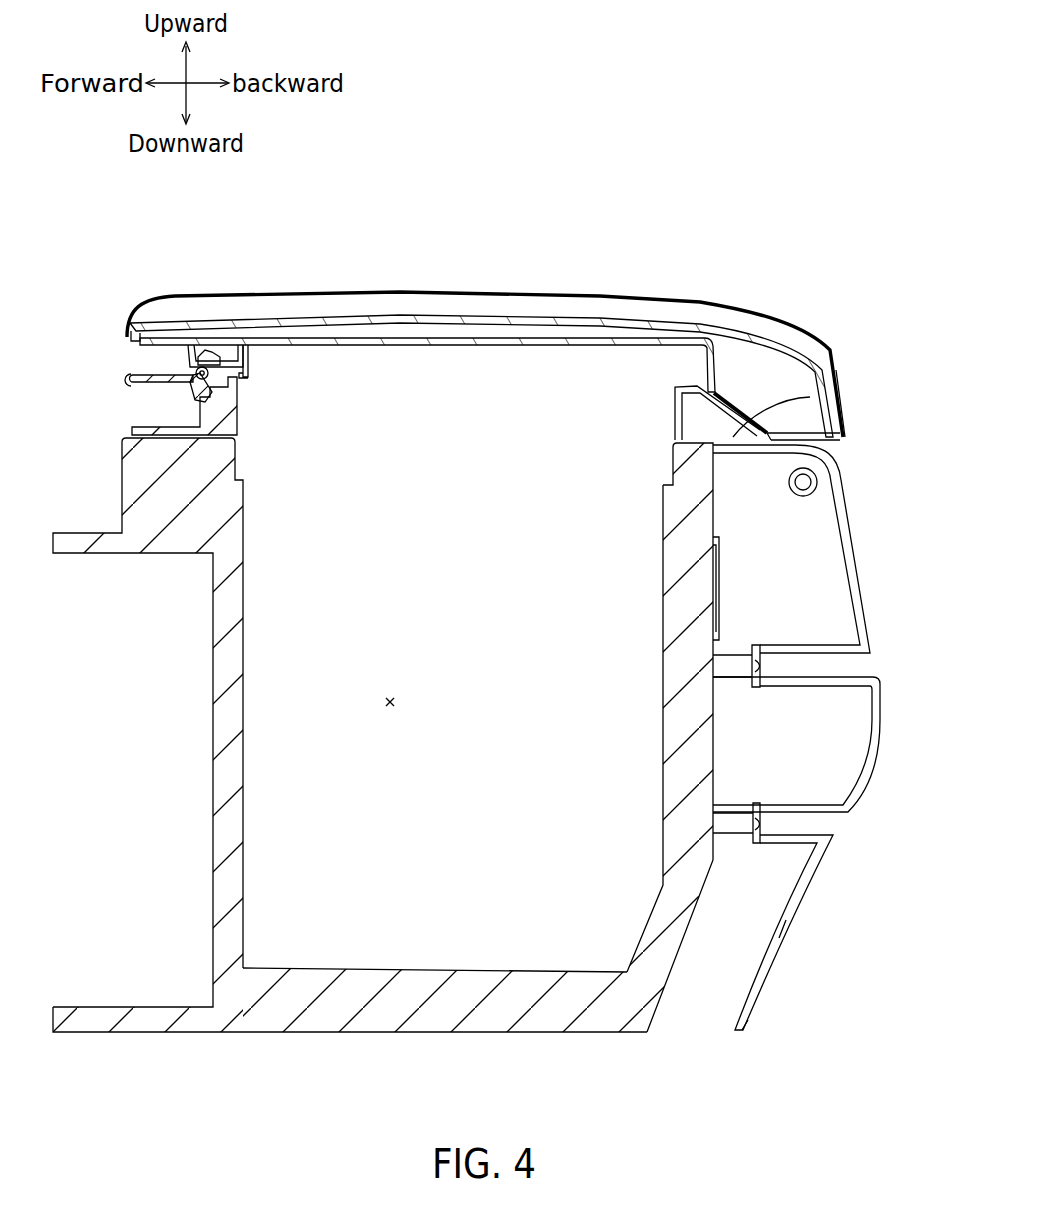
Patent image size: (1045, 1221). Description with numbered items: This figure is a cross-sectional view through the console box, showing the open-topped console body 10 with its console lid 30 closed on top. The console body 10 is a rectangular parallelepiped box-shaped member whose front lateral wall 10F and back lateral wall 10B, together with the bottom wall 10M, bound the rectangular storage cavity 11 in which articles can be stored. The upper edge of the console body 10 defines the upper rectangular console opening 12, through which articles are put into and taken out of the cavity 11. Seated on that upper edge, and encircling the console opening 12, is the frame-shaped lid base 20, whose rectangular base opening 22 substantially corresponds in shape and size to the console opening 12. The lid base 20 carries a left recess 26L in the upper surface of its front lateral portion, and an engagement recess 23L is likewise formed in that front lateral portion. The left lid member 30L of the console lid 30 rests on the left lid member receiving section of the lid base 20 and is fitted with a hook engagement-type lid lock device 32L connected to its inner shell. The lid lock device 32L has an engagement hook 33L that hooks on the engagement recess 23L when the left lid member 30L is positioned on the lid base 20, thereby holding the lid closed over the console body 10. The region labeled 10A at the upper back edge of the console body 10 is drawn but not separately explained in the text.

The console body 10 is at (499, 778).
The upper opening edge of housing 10A is at (810, 397).
The back lateral wall 10B is at (687, 780).
The front lateral wall 10F is at (228, 836).
The bottom wall 10M is at (440, 1007).
The storage portion or cavity 11 is at (388, 702).
The console opening 12 is at (670, 467).
The lid base 20 is at (696, 386).
The base opening 22 is at (672, 395).
The engagement recess 23L is at (240, 408).
The left recess 26L is at (150, 427).
The console lid 30 is at (486, 317).
The left lid member 30L is at (413, 290).
The lid lock device 32L is at (147, 383).
The engagement hook 33L is at (170, 377).